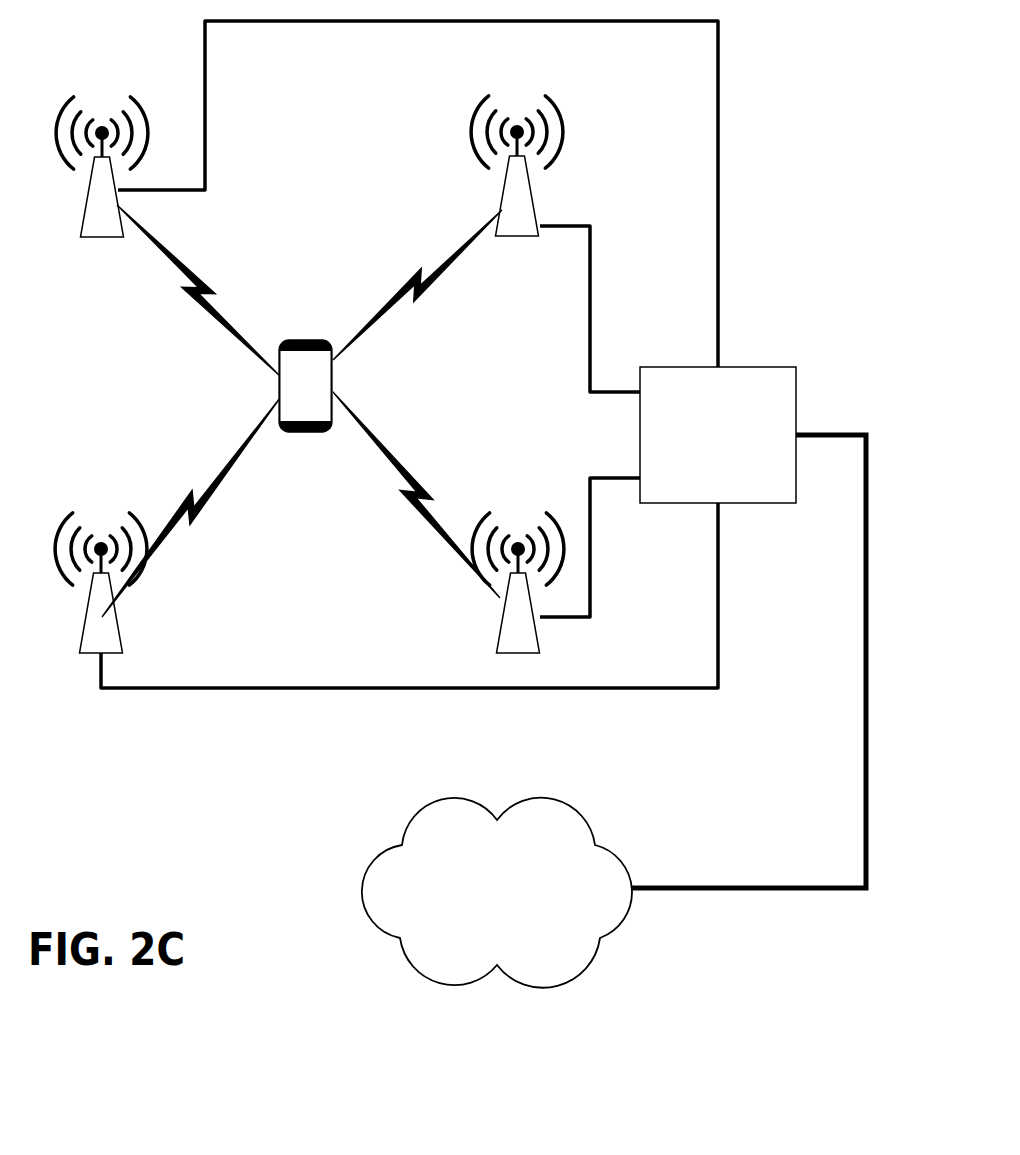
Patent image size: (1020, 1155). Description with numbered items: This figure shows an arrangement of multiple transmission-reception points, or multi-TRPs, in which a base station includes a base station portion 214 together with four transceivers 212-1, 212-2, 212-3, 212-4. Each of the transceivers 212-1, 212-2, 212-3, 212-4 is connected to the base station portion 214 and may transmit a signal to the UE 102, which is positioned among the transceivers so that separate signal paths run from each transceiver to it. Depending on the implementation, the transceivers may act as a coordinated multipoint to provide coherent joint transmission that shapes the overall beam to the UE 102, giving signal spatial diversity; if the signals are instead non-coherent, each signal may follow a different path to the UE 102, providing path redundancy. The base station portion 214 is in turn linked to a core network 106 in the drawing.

The transceiver 212-1 is at (101, 237).
The transceiver 212-2 is at (512, 199).
The transceiver 212-3 is at (105, 635).
The transceiver 212-4 is at (503, 618).
The UE 102 is at (315, 340).
The base station portion 214 is at (718, 435).
The core network 106 is at (497, 893).